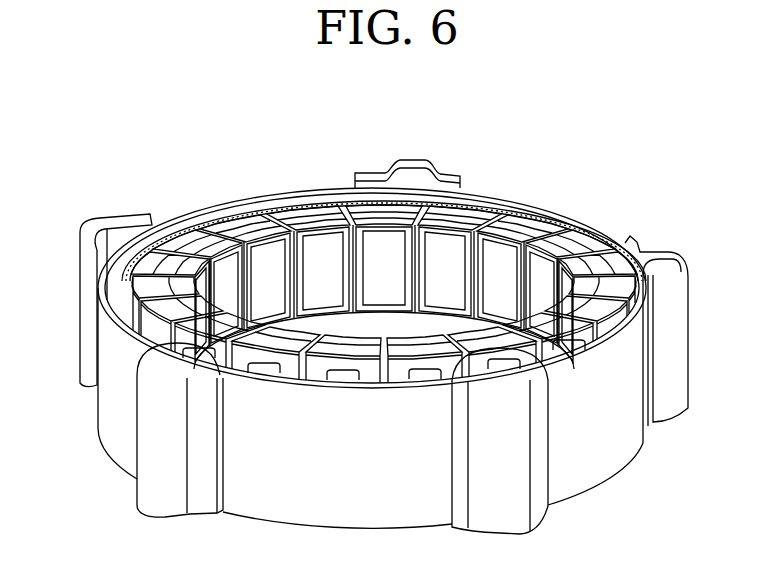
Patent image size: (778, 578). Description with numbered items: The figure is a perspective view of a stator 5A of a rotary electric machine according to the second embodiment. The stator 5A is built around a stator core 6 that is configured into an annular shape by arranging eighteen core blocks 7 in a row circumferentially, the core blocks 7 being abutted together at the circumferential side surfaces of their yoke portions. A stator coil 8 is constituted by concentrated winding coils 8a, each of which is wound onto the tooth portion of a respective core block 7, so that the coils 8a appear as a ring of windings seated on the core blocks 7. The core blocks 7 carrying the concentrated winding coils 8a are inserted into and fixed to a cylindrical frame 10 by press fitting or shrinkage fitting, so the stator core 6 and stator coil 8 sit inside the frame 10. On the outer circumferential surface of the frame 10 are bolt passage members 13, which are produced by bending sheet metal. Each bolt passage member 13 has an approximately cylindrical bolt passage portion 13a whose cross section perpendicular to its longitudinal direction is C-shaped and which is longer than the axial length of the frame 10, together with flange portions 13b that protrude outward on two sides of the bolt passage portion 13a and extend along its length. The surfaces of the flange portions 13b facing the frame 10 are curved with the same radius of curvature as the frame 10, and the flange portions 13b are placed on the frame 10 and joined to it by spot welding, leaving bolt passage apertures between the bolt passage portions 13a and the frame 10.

The stator 5A is at (124, 88).
The stator core 6 is at (610, 263).
The core blocks 7 is at (118, 280).
The stator coil 8 is at (540, 205).
The concentrated winding coils 8a is at (245, 202).
The frame 10 is at (110, 420).
The bolt passage members 13 is at (441, 152).
The bolt passage portion 13a is at (410, 160).
The flange portions 13b is at (368, 173).